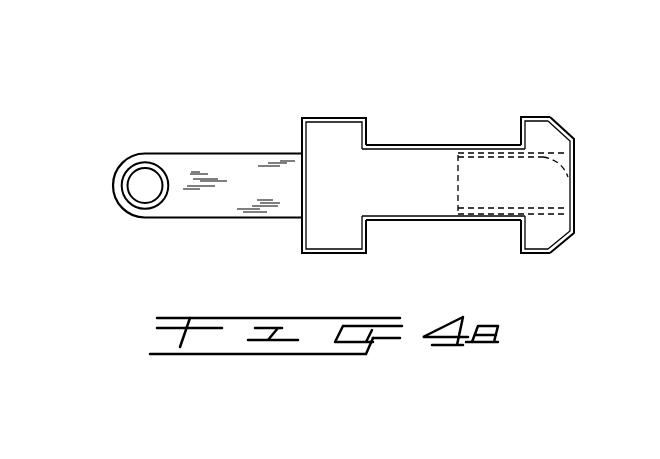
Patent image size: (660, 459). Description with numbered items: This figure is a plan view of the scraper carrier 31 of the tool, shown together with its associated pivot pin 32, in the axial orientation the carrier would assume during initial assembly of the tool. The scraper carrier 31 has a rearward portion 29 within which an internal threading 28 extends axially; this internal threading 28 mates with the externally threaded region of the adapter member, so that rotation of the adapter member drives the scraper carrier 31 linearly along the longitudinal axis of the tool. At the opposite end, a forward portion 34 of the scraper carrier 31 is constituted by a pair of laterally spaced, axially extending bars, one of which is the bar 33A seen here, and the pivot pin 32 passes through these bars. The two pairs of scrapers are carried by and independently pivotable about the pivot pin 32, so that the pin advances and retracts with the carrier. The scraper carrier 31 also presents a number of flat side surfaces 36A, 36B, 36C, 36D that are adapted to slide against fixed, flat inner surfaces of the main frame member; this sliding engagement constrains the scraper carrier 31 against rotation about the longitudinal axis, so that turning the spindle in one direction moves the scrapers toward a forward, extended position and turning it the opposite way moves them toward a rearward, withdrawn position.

The internal threading 28 is at (580, 176).
The rearward portion 29 is at (549, 138).
The scraper carrier 31 is at (393, 165).
The pivot pin 32 is at (150, 182).
The bar 33A is at (238, 168).
The forward portion 34 is at (129, 160).
The flat side surface 36A is at (326, 117).
The flat side surface 36B is at (540, 117).
The flat side surface 36C is at (338, 254).
The flat side surface 36D is at (538, 254).